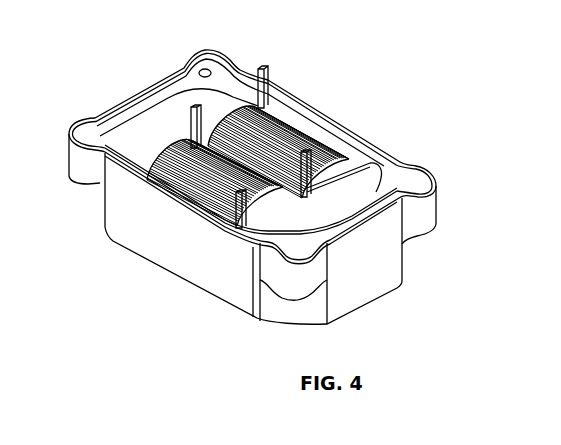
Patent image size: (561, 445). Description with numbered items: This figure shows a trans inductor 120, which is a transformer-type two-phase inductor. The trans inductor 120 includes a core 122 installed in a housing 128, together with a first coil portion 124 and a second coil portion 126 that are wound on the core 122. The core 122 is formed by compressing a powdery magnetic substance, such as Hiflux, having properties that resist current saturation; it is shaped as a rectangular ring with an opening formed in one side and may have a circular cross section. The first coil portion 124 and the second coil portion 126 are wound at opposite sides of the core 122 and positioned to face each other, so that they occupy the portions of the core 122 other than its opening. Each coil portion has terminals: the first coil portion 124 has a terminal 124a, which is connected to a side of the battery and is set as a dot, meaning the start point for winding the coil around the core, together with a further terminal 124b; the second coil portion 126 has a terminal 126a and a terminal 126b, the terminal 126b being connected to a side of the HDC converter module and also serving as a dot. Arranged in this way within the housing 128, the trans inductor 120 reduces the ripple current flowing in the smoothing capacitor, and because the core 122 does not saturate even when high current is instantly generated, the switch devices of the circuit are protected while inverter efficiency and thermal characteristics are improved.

The trans inductor 120 is at (93, 100).
The core 122 is at (163, 138).
The first coil portion 124 is at (290, 133).
The terminal of the first coil portion 124a is at (265, 67).
The terminal of the first coil portion 124b is at (385, 169).
The second coil portion 126 is at (210, 191).
The terminal of the second coil portion 126a is at (202, 105).
The terminal of the second coil portion 126b is at (228, 210).
The housing 128 is at (367, 139).